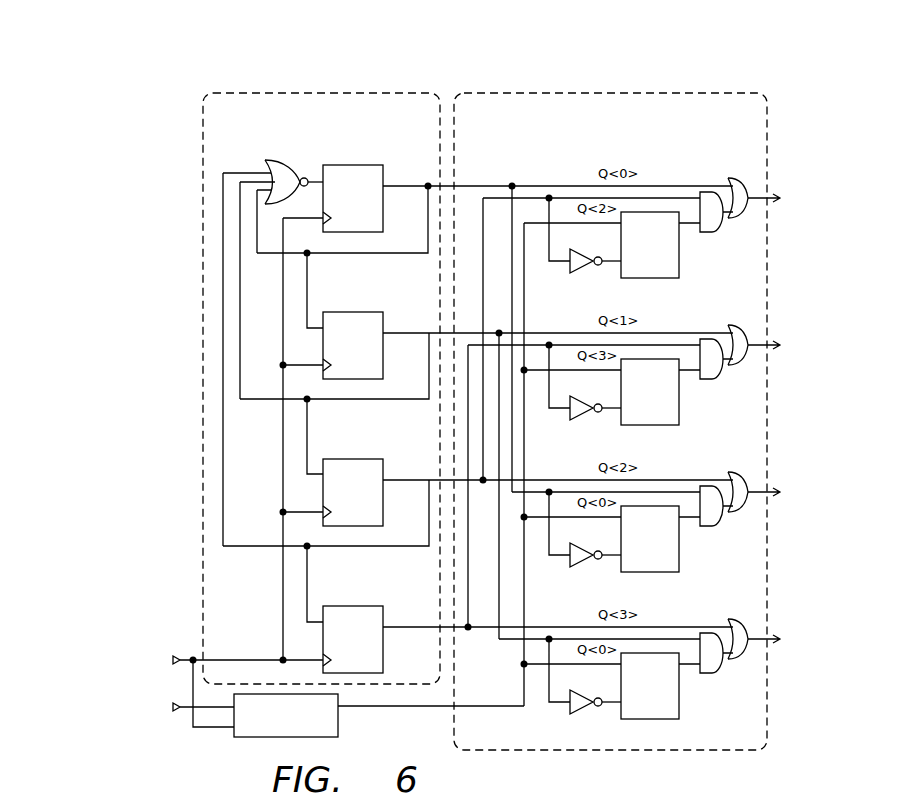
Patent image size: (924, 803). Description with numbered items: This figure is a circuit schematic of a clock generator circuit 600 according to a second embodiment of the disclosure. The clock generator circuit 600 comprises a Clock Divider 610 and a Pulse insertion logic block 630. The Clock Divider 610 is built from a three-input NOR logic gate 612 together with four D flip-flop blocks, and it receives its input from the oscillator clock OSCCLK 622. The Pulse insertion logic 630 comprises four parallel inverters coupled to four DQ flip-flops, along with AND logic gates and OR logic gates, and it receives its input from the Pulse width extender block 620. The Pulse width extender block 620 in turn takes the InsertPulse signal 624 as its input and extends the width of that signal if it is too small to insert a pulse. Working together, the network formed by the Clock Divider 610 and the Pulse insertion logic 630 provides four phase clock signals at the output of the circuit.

The clock generator circuit 600 is at (215, 48).
The Clock Divider 610 is at (276, 93).
The 3-input NOR logic gate 612 is at (272, 158).
The Pulse width extender block 620 is at (243, 737).
The oscillator clock OSCCLK 622 is at (127, 652).
The InsertPulse signal 624 is at (93, 692).
The Pulse insertion logic 630 is at (498, 93).